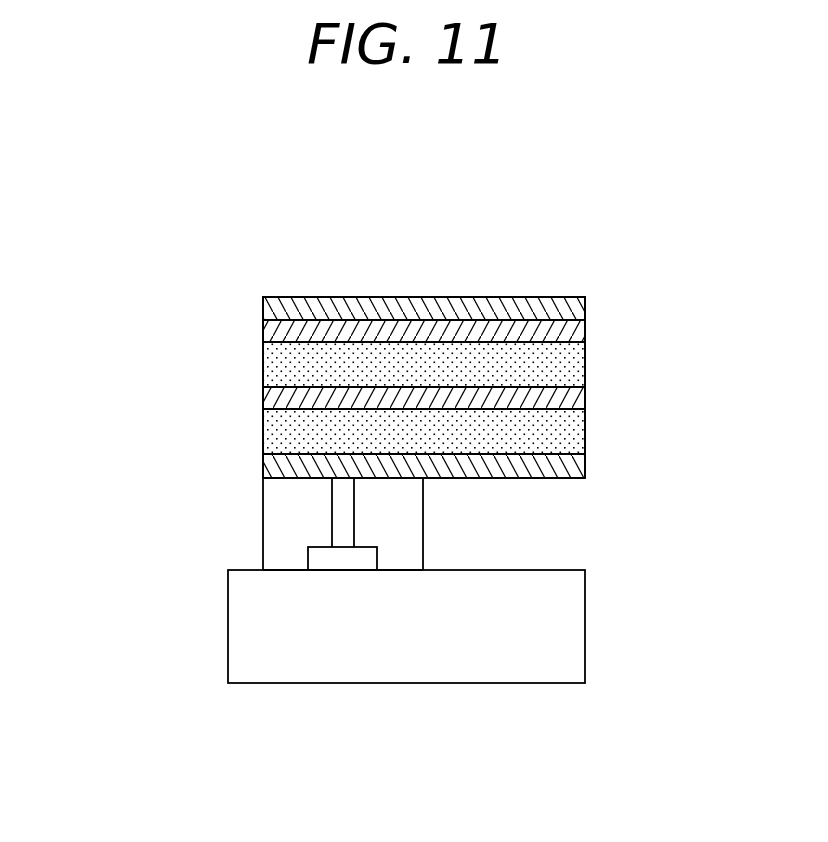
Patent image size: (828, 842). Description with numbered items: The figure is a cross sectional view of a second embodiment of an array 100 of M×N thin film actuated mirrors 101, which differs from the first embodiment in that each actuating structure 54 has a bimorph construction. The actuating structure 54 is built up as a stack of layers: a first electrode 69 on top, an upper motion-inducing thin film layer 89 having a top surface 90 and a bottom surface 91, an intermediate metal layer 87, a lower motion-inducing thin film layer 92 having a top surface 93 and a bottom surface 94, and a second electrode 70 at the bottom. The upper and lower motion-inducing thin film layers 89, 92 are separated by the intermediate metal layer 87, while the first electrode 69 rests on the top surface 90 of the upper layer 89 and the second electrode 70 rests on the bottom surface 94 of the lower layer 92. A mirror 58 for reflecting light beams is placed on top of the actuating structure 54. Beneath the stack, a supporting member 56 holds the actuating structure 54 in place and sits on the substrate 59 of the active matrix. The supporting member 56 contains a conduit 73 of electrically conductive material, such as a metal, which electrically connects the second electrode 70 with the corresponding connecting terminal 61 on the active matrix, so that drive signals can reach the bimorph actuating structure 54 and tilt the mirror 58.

The thin film actuated mirror 101 is at (585, 216).
The array of M×N thin film actuated mirrors 100 is at (230, 297).
The mirror 58 is at (297, 298).
The first electrode 69 is at (272, 330).
The upper motion-inducing thin film layer 89 is at (272, 365).
The intermediate metal layer 87 is at (268, 402).
The lower motion-inducing thin film layer 92 is at (272, 432).
The second electrode 70 is at (268, 470).
The top surface of upper motion-inducing thin film layer 90 is at (453, 352).
The bottom surface of upper motion-inducing thin film layer 91 is at (533, 385).
The top surface of lower motion-inducing thin film layer 93 is at (538, 410).
The bottom surface of lower motion-inducing thin film layer 94 is at (533, 455).
The actuating structure 54 is at (672, 320).
The supporting member 56 is at (283, 515).
The conduit 73 is at (346, 518).
The connecting terminal 61 is at (330, 562).
The substrate 59 is at (563, 628).